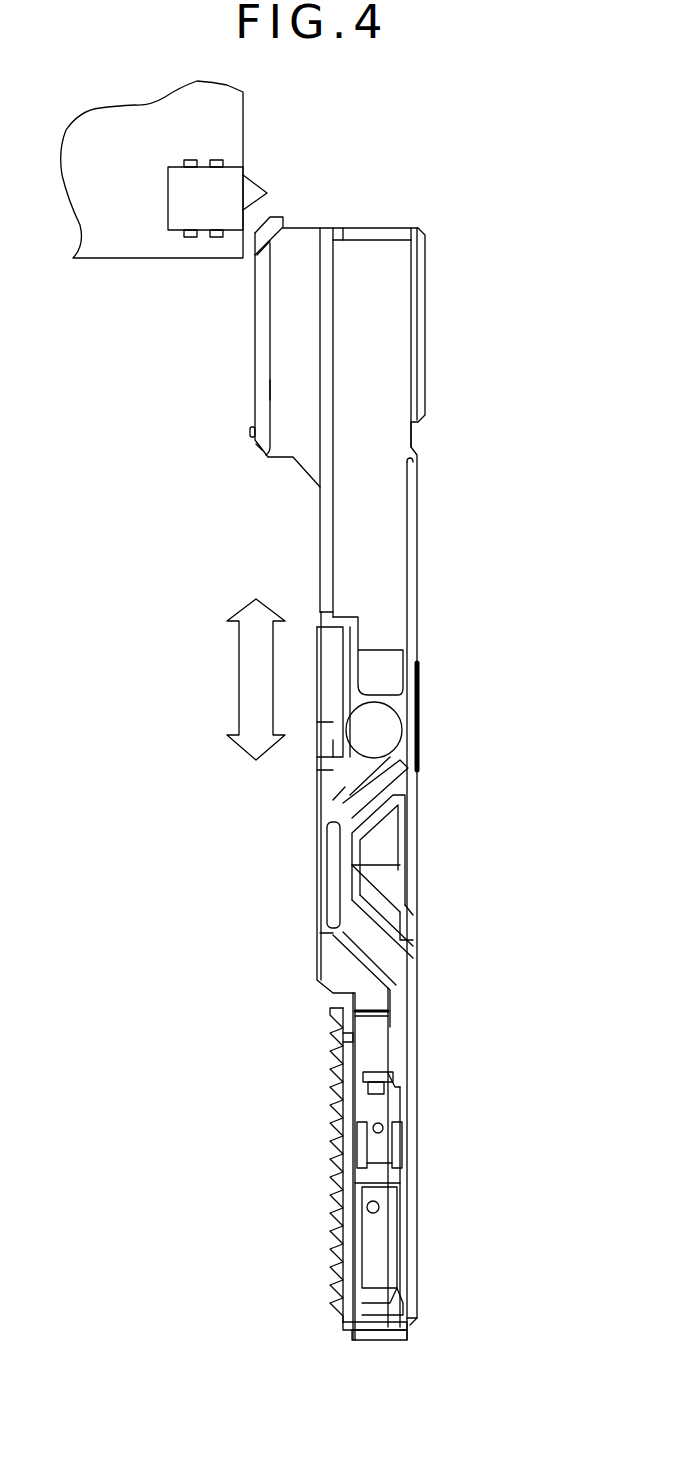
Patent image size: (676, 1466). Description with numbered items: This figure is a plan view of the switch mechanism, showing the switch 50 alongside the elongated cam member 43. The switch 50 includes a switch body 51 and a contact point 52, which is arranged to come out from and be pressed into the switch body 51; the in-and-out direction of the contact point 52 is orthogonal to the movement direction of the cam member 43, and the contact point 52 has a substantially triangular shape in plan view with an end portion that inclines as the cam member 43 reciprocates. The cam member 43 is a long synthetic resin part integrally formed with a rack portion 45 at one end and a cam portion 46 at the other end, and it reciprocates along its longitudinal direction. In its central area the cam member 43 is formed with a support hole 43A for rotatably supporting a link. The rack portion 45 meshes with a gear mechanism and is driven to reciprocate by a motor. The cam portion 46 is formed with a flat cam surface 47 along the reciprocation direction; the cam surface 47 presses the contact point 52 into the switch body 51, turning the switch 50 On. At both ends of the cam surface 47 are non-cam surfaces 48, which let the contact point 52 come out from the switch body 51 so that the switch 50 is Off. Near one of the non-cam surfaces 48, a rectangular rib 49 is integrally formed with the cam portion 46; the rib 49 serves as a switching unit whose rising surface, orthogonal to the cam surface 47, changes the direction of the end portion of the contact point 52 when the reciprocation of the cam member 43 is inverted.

The cam member 43 is at (339, 761).
The support hole 43A is at (386, 726).
The rack portion 45 is at (321, 1143).
The cam portion 46 is at (280, 388).
The cam surface 47 is at (255, 352).
The non-cam surfaces 48 is at (257, 223).
The rib 49 is at (250, 432).
The switch 50 is at (158, 239).
The switch body 51 is at (232, 176).
The contact point 52 is at (261, 180).